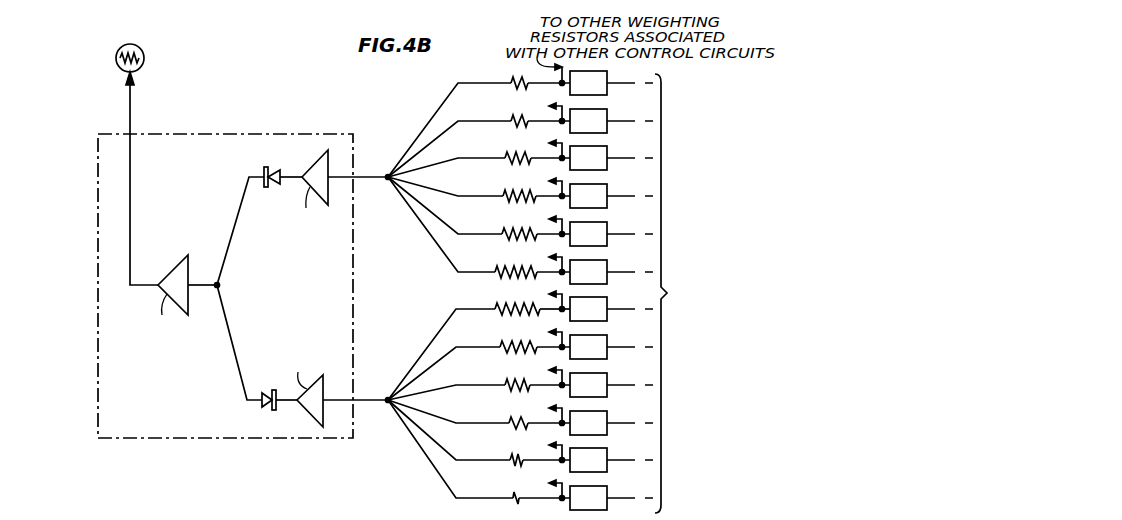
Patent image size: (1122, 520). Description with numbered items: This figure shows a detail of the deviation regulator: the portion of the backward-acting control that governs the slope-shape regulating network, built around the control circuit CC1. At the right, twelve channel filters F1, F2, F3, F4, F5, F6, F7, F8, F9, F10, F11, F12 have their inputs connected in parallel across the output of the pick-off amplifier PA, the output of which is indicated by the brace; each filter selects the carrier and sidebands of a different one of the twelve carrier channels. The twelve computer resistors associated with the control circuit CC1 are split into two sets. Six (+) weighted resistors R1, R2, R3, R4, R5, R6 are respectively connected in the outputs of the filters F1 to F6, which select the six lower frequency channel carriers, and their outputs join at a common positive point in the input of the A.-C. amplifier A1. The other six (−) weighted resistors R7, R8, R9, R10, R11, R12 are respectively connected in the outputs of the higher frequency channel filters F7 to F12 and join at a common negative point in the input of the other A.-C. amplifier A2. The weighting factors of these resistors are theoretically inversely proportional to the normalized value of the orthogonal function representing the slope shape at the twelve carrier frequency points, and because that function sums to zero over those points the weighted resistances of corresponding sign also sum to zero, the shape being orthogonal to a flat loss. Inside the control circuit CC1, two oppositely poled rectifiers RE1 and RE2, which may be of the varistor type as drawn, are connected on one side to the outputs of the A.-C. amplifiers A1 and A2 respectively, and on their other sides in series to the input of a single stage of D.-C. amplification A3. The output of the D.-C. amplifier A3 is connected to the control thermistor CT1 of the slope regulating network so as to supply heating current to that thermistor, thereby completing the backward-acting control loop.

The control thermistor CT1 is at (144, 60).
The control circuit CC1 is at (262, 133).
The rectifier RE1 is at (268, 166).
The rectifier RE2 is at (273, 412).
The A.-C. amplifier A1 is at (334, 185).
The A.-C. amplifier A2 is at (330, 391).
The D.-C. amplifier A3 is at (180, 292).
The weighted resistor R1 is at (512, 78).
The weighted resistor R2 is at (512, 116).
The weighted resistor R3 is at (506, 153).
The weighted resistor R4 is at (505, 191).
The weighted resistor R5 is at (504, 229).
The weighted resistor R6 is at (498, 267).
The weighted resistor R7 is at (498, 304).
The weighted resistor R8 is at (502, 342).
The weighted resistor R9 is at (506, 380).
The weighted resistor R10 is at (510, 418).
The weighted resistor R11 is at (510, 455).
The weighted resistor R12 is at (512, 493).
The channel filter F1 is at (595, 76).
The channel filter F2 is at (601, 118).
The channel filter F3 is at (601, 155).
The channel filter F4 is at (601, 193).
The channel filter F5 is at (601, 231).
The channel filter F6 is at (601, 269).
The channel filter F7 is at (601, 306).
The channel filter F8 is at (601, 344).
The channel filter F9 is at (601, 382).
The channel filter F10 is at (601, 420).
The channel filter F11 is at (601, 457).
The channel filter F12 is at (601, 495).
The pick-off amplifier PA is at (708, 293).